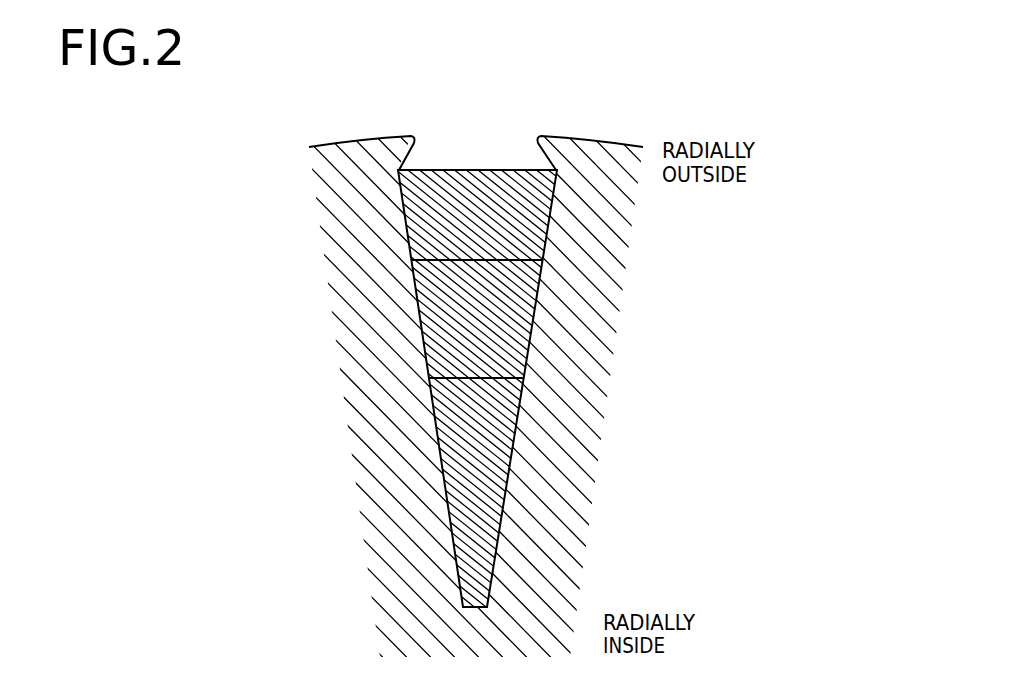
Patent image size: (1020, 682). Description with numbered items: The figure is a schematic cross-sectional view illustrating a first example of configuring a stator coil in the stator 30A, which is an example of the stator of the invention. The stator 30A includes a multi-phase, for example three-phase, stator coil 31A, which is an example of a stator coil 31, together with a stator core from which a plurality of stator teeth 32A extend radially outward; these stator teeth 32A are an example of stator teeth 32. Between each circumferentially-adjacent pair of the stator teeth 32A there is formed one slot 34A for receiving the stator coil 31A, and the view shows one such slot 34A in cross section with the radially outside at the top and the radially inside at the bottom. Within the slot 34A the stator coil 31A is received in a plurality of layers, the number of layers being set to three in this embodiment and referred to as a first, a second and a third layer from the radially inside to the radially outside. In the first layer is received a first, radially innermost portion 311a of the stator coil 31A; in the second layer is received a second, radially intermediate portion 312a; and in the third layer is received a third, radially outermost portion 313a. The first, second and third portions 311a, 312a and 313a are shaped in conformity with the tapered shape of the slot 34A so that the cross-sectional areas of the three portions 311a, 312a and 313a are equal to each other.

The stator 30A is at (510, 395).
The slot 34A is at (420, 312).
The stator teeth 32 is at (476, 129).
The stator teeth 32A is at (588, 182).
The stator coil 31 is at (510, 389).
The stator coil 31A is at (510, 389).
The first portion 311a is at (766, 208).
The second portion 312a is at (498, 323).
The third portion 313a is at (503, 226).